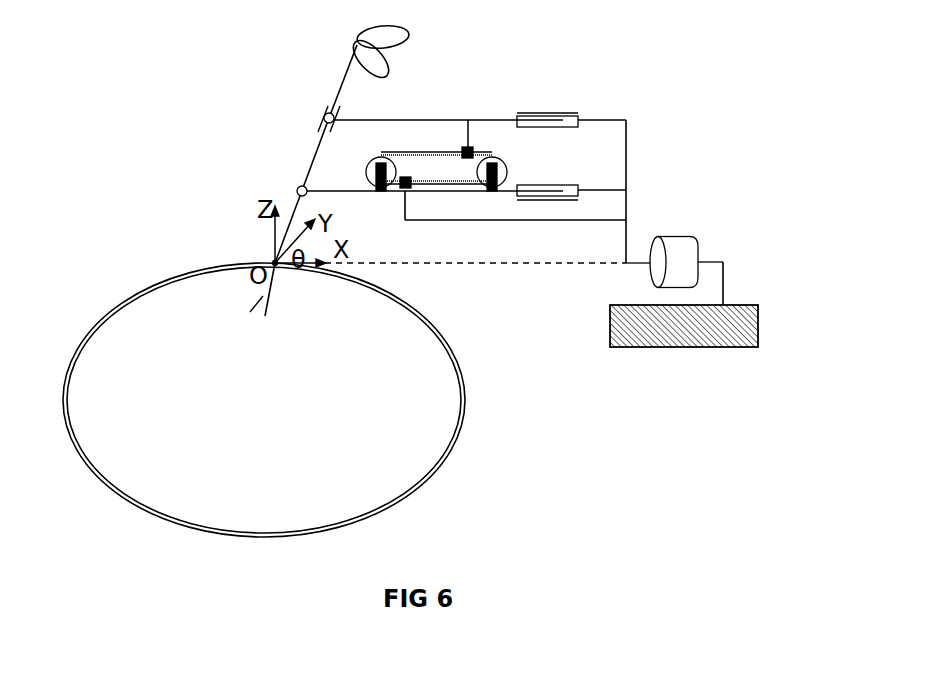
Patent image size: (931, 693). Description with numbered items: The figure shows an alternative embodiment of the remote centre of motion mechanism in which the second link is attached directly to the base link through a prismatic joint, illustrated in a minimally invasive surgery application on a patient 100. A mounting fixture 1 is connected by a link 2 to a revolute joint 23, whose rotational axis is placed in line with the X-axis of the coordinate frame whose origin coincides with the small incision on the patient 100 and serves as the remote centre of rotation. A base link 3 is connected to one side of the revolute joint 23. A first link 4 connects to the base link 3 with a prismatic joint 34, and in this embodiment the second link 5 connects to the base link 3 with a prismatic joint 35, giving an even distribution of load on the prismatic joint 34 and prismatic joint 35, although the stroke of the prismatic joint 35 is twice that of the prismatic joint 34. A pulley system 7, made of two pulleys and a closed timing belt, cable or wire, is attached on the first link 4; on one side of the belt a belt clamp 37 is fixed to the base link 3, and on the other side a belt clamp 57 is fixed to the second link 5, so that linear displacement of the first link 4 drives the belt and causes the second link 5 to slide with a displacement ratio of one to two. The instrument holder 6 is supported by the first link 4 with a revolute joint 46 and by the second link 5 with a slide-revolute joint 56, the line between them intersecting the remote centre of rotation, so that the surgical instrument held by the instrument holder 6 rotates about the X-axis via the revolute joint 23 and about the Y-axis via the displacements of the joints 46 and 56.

The mounting fixture 1 is at (610, 323).
The link 2 is at (723, 292).
The base link 3 is at (570, 226).
The first link 4 is at (424, 198).
The second link 5 is at (424, 118).
The instrument holder 6 is at (341, 72).
The pulley system 7 is at (368, 176).
The revolute joint 23 is at (670, 217).
The prismatic joint 34 is at (537, 186).
The prismatic joint 35 is at (531, 114).
The belt clamp 37 is at (407, 180).
The revolute joint 46 is at (298, 190).
The slide-revolute joint 56 is at (319, 117).
The belt clamp 57 is at (473, 148).
The patient 100 is at (291, 397).